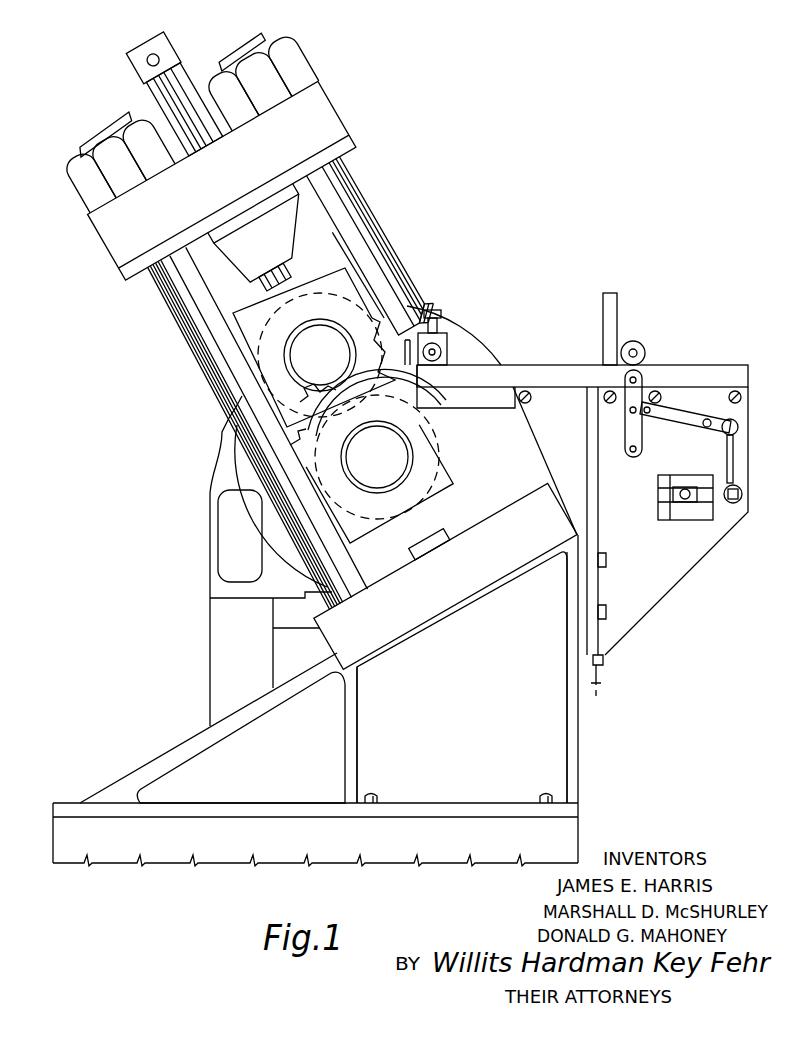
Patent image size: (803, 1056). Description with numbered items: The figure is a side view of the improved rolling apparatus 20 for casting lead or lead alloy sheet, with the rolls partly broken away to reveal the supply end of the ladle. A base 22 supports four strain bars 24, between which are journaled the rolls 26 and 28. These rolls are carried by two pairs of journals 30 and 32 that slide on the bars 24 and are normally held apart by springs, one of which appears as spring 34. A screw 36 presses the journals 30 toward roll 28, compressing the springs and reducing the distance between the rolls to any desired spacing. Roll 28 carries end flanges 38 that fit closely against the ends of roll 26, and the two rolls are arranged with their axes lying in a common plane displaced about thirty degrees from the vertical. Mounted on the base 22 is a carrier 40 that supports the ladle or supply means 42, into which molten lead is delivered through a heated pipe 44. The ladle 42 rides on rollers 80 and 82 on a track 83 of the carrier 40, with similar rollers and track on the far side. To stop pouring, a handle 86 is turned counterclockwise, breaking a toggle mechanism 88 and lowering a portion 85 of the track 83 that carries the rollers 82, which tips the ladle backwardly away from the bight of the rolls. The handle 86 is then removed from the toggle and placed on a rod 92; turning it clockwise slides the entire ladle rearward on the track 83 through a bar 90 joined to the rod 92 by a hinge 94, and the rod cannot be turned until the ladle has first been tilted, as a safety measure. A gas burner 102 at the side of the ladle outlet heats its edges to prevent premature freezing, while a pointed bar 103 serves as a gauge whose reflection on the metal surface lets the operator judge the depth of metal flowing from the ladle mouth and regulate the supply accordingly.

The rolling apparatus 20 is at (221, 178).
The base 22 is at (578, 745).
The strain bars 24 is at (246, 434).
The roll 26 is at (366, 247).
The roll 28 is at (425, 418).
The journals 30 is at (258, 428).
The journals 32 is at (307, 460).
The spring 34 is at (325, 418).
The screw 36 is at (153, 58).
The end flanges 38 is at (411, 517).
The carrier 40 is at (697, 560).
The ladle 42 is at (513, 430).
The pipe 44 is at (617, 310).
The roller 80 is at (447, 340).
The roller 82 is at (644, 350).
The track 83 is at (549, 366).
The track portion 85 is at (652, 380).
The handle 86 is at (733, 460).
The toggle mechanism 88 is at (697, 430).
The bar 90 is at (660, 517).
The rod 92 is at (742, 497).
The hinge 94 is at (687, 520).
The gas burner 102 is at (380, 370).
The pointed bar 103 is at (426, 313).